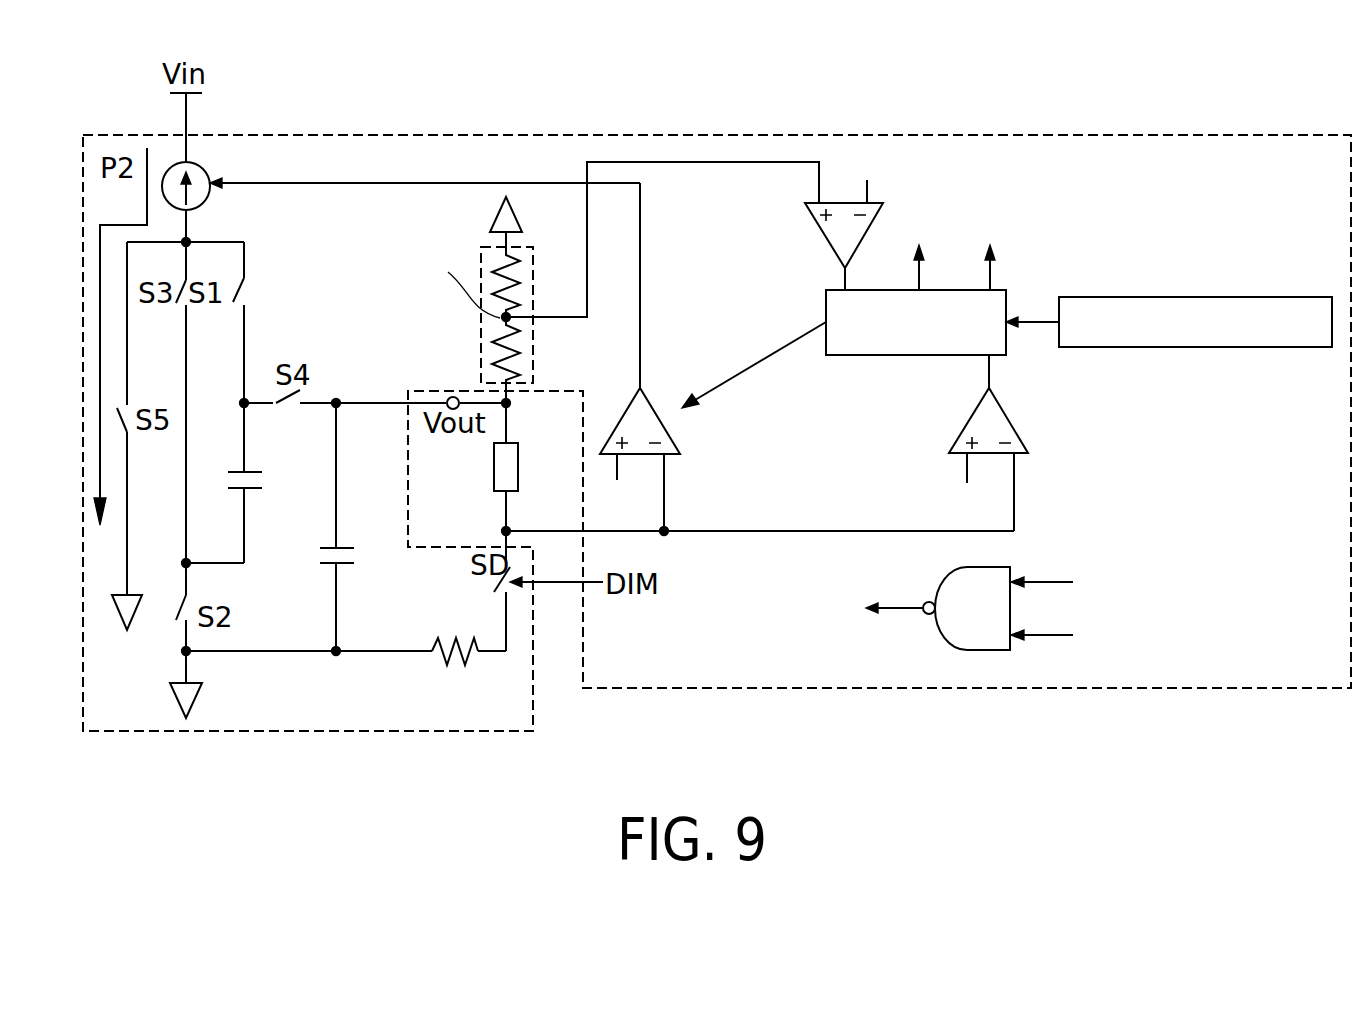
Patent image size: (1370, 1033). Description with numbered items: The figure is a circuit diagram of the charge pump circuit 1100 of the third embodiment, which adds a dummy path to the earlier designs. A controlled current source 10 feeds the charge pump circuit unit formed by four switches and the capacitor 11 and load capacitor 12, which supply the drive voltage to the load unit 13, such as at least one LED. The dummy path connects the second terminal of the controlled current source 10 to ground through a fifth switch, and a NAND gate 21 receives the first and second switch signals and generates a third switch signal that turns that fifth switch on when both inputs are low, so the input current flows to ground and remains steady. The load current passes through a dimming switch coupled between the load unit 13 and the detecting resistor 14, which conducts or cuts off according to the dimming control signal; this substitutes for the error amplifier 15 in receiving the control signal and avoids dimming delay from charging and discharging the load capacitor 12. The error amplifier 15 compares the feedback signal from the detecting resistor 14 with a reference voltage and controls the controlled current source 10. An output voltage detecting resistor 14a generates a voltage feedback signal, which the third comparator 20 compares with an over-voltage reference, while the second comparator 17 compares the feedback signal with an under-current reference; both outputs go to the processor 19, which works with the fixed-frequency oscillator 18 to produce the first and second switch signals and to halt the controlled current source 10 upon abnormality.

The charge pump circuit 1100 is at (462, 135).
The controlled current source 10 is at (203, 206).
The capacitor 11 is at (251, 470).
The load capacitor 12 is at (330, 566).
The load unit 13 is at (505, 468).
The detecting resistor 14 is at (448, 640).
The output voltage detecting resistor 14a is at (481, 325).
The error amplifier 15 is at (655, 405).
The second comparator 17 is at (1022, 432).
The oscillator 18 is at (1230, 350).
The processor 19 is at (1010, 304).
The third comparator 20 is at (820, 228).
The NAND gate 21 is at (940, 590).